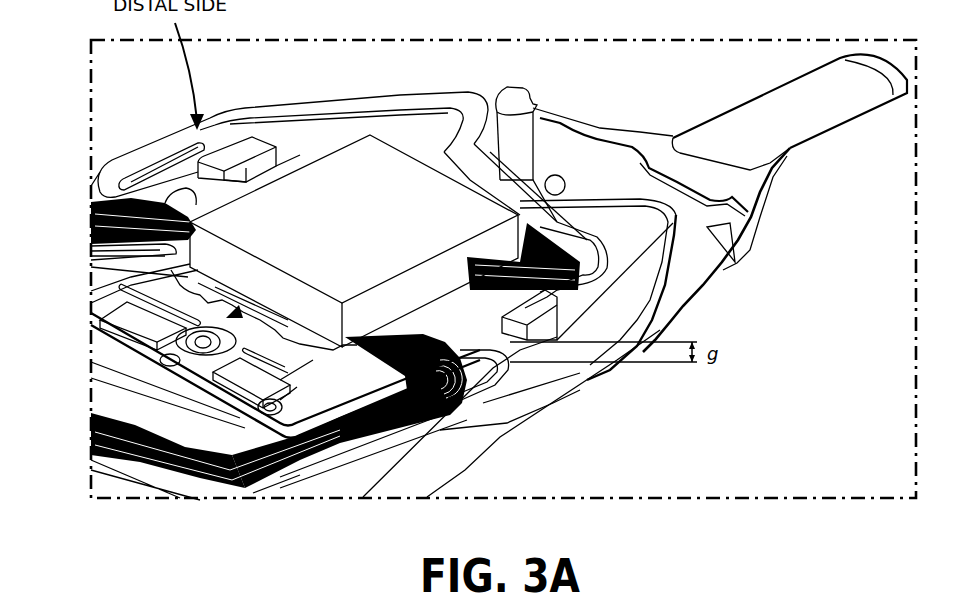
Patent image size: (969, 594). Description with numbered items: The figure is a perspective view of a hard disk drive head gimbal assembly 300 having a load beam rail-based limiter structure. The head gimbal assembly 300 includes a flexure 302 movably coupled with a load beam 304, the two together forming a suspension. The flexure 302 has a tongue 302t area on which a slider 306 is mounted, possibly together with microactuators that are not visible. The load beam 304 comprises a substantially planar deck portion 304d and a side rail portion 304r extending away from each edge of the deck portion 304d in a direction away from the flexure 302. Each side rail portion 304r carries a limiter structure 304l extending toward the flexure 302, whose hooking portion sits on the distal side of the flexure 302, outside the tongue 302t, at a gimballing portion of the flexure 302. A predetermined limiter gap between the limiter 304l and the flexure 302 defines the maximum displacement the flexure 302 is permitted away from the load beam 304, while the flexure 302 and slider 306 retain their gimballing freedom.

The head gimbal assembly 300 is at (806, 362).
The flexure 302 is at (382, 96).
The tongue 302t is at (93, 318).
The load beam 304 is at (468, 448).
The deck portion 304d is at (517, 148).
The limiter structure 304l is at (545, 305).
The side rail portion 304r is at (720, 268).
The slider 306 is at (350, 226).